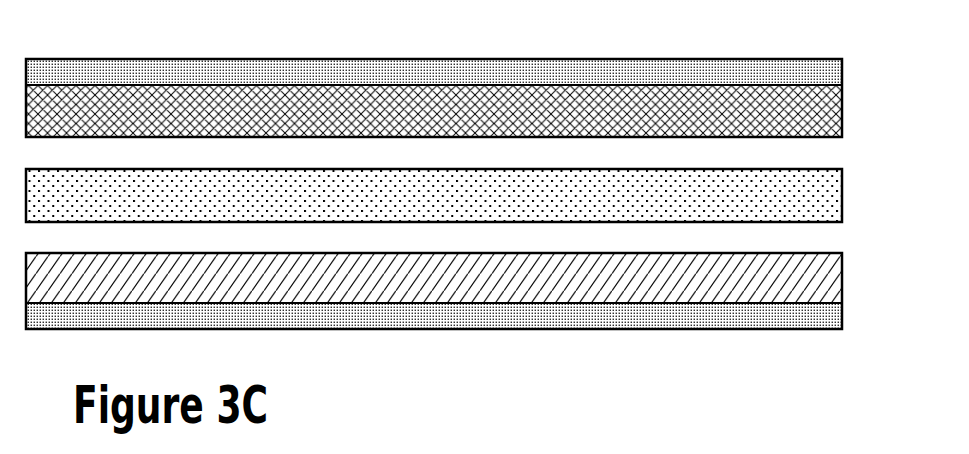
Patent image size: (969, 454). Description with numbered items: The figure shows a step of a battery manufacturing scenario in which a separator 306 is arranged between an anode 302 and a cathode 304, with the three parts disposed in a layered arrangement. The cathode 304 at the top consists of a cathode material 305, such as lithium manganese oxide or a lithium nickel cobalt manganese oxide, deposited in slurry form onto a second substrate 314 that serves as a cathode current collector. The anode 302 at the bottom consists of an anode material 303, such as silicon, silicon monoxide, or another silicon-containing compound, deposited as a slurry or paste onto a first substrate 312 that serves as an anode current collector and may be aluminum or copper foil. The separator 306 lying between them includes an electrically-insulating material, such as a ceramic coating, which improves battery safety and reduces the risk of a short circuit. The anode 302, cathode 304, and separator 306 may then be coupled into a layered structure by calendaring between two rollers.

The anode 302 is at (466, 291).
The anode material 303 is at (105, 293).
The cathode 304 is at (466, 102).
The cathode material 305 is at (105, 123).
The separator 306 is at (105, 210).
The first substrate 312 is at (105, 328).
The second substrate 314 is at (105, 82).